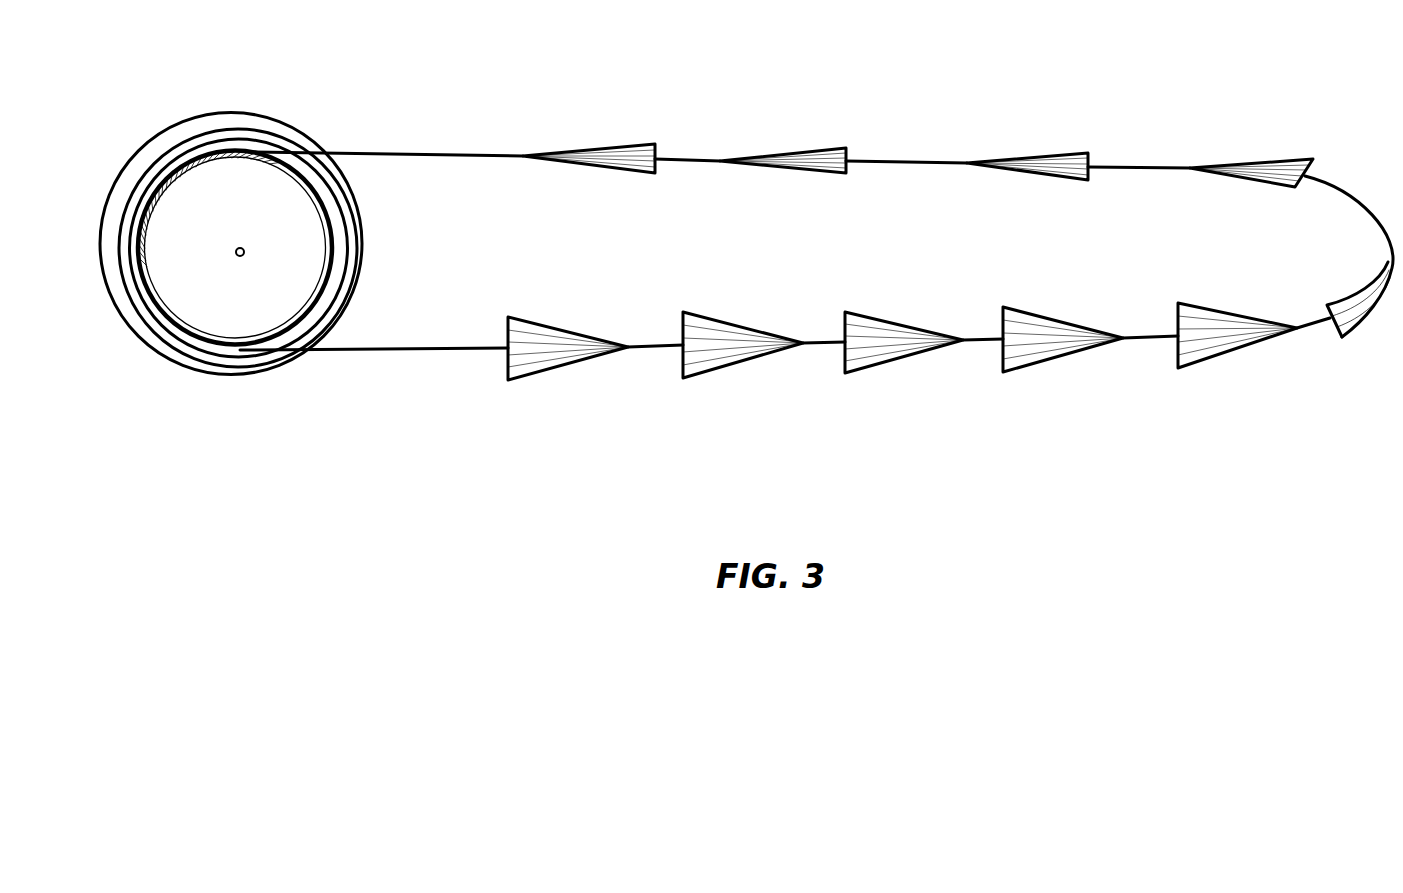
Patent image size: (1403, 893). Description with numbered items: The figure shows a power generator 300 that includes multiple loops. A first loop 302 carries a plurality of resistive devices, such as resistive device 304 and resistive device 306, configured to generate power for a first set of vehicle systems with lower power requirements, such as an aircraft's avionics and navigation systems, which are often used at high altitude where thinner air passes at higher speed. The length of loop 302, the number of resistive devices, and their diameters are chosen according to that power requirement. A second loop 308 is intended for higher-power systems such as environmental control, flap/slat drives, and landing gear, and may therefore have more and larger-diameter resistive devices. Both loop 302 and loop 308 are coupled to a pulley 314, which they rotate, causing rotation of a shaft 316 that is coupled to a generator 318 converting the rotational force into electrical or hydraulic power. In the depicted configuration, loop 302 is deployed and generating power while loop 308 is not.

The power generator 300 is at (746, 282).
The loop 302 is at (923, 163).
The resistive device 304 is at (753, 380).
The resistive device 306 is at (787, 150).
The loop 308 is at (330, 215).
The pulley 314 is at (297, 268).
The shaft 316 is at (242, 262).
The generator 318 is at (245, 113).